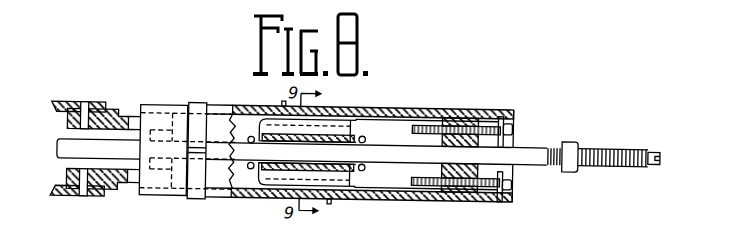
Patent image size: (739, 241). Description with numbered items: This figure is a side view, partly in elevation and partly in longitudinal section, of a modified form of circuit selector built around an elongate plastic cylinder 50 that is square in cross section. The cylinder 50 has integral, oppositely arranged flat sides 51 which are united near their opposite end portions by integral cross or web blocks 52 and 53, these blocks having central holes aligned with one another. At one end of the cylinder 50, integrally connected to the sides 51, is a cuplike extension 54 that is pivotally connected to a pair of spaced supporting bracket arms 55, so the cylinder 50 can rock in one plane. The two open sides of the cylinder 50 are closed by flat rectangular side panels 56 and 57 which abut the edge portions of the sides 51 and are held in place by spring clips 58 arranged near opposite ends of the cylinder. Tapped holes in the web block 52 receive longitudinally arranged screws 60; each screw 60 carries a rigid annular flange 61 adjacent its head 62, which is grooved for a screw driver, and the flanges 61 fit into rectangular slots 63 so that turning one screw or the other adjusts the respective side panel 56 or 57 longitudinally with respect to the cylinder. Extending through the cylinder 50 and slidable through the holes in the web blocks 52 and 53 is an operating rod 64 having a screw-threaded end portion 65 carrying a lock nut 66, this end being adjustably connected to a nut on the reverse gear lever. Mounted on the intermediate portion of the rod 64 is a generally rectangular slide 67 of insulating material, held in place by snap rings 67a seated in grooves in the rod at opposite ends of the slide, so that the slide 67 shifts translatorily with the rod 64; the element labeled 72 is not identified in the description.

The cylinder 50 is at (163, 129).
The flat sides 51 is at (277, 155).
The web block 52 is at (378, 139).
The web block 53 is at (187, 125).
The cuplike extension 54 is at (103, 135).
The supporting bracket arms 55 is at (72, 133).
The side panel 56 is at (359, 139).
The side panel 57 is at (372, 213).
The spring clips 58 is at (210, 139).
The screws 60 is at (461, 136).
The annular flange 61 is at (494, 136).
The head 62 is at (532, 122).
The rectangular slots 63 is at (499, 205).
The operating rod 64 is at (573, 143).
The screw-threaded end portion 65 is at (619, 145).
The lock nut 66 is at (573, 173).
The slide 67 is at (320, 113).
The snap rings 67a is at (288, 181).
The lower bushing 72 is at (305, 202).